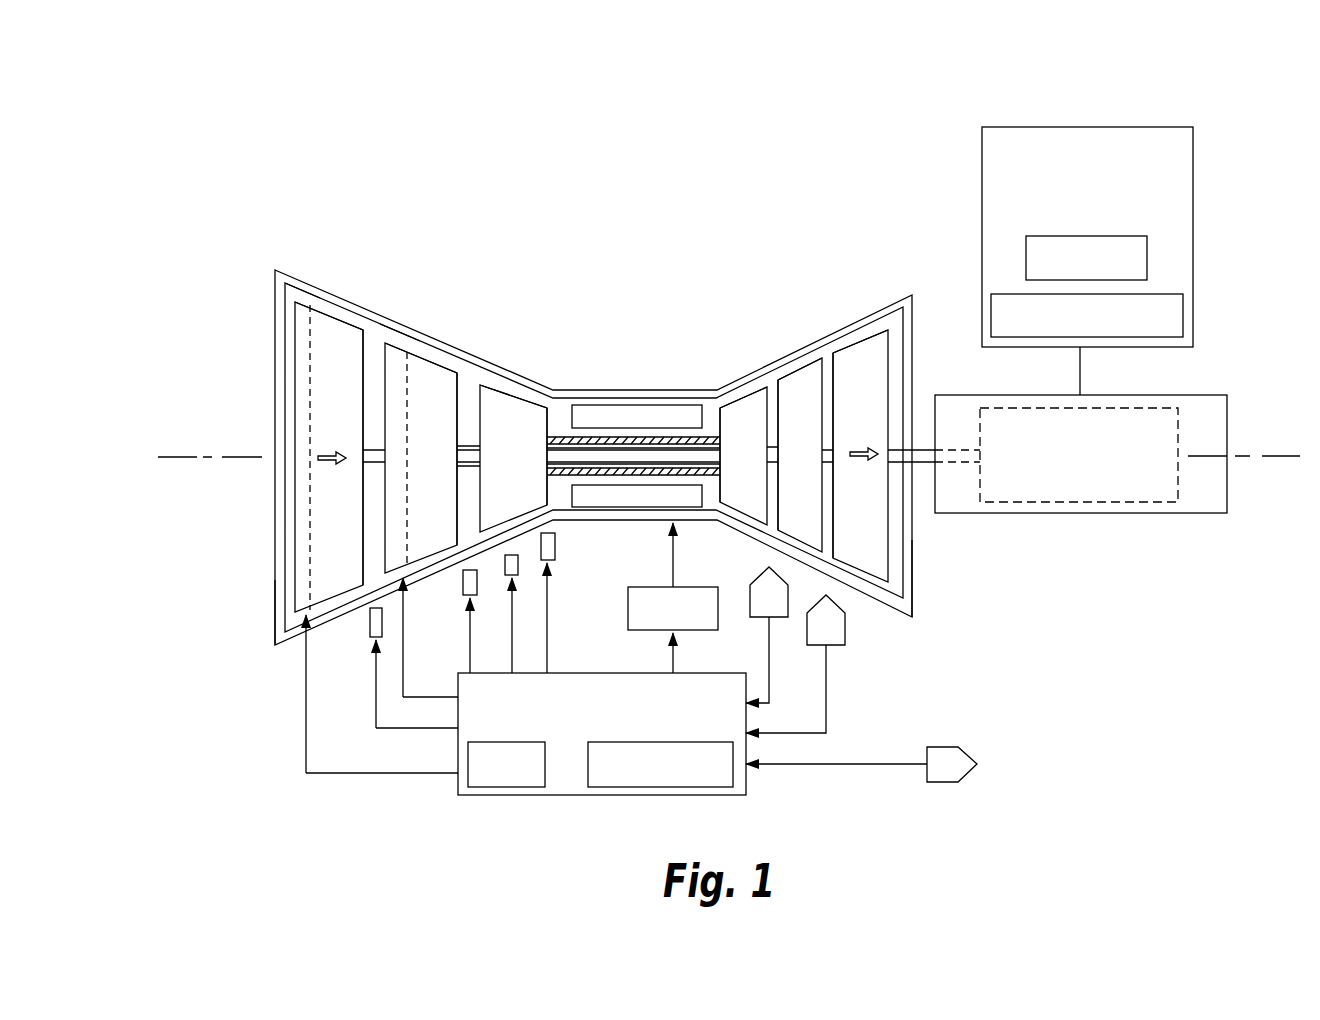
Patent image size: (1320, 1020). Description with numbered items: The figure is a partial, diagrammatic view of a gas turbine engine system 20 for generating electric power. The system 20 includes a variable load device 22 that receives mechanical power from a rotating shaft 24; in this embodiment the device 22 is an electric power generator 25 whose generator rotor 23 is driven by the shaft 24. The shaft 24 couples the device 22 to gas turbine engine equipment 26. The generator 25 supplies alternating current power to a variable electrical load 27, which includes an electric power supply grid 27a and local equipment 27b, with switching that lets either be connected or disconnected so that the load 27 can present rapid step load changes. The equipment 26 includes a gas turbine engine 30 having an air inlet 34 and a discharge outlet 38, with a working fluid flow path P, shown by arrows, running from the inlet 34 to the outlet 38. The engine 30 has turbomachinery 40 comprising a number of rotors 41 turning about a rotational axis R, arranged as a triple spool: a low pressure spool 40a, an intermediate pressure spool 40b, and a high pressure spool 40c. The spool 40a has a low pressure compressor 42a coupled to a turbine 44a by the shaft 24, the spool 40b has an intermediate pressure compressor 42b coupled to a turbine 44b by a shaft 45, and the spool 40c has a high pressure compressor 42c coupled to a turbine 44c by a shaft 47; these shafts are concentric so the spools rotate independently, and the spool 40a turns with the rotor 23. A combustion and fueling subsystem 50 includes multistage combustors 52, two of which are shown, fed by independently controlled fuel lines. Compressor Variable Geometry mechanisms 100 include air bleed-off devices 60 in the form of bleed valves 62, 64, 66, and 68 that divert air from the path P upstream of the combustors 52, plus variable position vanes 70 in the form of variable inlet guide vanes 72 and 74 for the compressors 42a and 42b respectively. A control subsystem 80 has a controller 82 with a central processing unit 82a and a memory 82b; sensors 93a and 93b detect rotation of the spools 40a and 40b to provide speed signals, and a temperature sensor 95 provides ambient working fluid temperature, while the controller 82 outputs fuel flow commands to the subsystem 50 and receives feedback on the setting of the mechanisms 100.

The gas turbine engine system 20 is at (312, 148).
The variable load device 22 is at (1138, 515).
The generator rotor 23 is at (1145, 408).
The shaft 24 is at (375, 450).
The electric power generator 25 is at (1091, 489).
The gas turbine engine equipment 26 is at (937, 265).
The variable electrical load 27 is at (1080, 127).
The electric power supply grid 27a is at (1147, 254).
The local equipment 27b is at (1183, 320).
The gas turbine engine 30 is at (275, 262).
The air inlet 34 is at (278, 592).
The discharge outlet 38 is at (912, 566).
The turbomachinery 40 is at (275, 430).
The low pressure spool 40a is at (348, 560).
The intermediate pressure spool 40b is at (445, 510).
The high pressure spool 40c is at (528, 498).
The rotors 41 is at (345, 407).
The low pressure compressor 42a is at (335, 325).
The intermediate pressure compressor 42b is at (432, 370).
The high pressure compressor 42c is at (508, 395).
The turbine 44a is at (865, 350).
The turbine 44b is at (800, 380).
The turbine 44c is at (745, 395).
The shaft 45 is at (632, 440).
The shaft 47 is at (690, 436).
The combustion and fueling subsystem 50 is at (583, 405).
The multistage combustors 52 is at (608, 405).
The air bleed-off devices 60 is at (368, 675).
The bleed valve 62 is at (370, 625).
The bleed valve 64 is at (465, 590).
The bleed valve 66 is at (507, 585).
The bleed valve 68 is at (556, 548).
The variable position vanes 70 is at (297, 305).
The variable inlet guide vanes 72 is at (305, 292).
The variable inlet guide vanes 74 is at (395, 345).
The control subsystem 80 is at (457, 795).
The controller 82 is at (614, 734).
The central processing unit 82a is at (510, 788).
The memory 82b is at (720, 796).
The sensor 93a is at (847, 633).
The sensor 93b is at (752, 597).
The temperature sensor 95 is at (940, 783).
The Compressor Variable Geometry mechanisms 100 is at (297, 672).
The working fluid flow path P is at (333, 466).
The rotational axis R is at (178, 456).